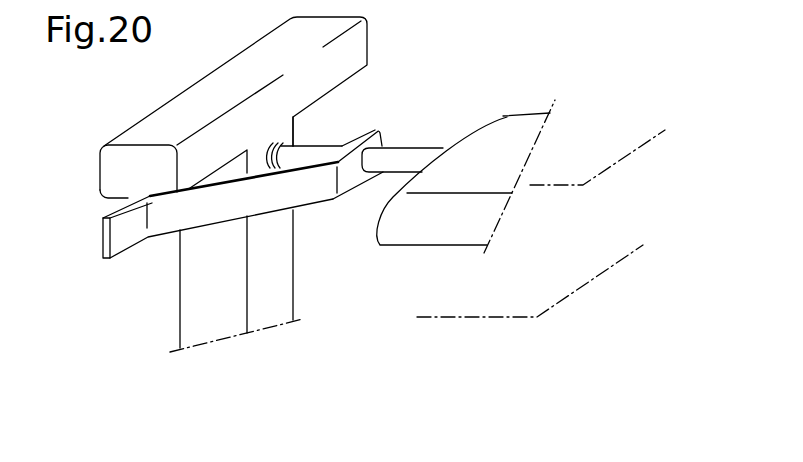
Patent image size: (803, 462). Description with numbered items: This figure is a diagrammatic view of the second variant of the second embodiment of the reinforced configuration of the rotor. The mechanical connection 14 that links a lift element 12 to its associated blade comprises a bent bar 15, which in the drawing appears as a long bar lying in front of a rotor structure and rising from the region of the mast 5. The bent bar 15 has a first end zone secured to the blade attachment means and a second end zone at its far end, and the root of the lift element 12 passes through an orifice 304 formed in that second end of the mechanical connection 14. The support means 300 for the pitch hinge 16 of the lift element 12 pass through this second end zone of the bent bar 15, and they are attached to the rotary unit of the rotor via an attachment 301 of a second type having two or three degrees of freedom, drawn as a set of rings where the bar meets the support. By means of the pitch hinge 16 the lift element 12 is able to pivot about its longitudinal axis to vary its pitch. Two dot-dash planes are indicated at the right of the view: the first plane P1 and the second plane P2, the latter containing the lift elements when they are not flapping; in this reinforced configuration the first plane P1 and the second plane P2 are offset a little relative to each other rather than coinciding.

The mast 5 is at (285, 320).
The lift element 12 is at (503, 118).
The mechanical connection 14 is at (140, 268).
The bent bar 15 is at (240, 233).
The pitch hinge 16 is at (444, 138).
The support means 300 is at (416, 156).
The attachment 301 is at (264, 132).
The orifice 304 is at (362, 161).
The first plane P1 is at (656, 141).
The second plane P2 is at (640, 249).